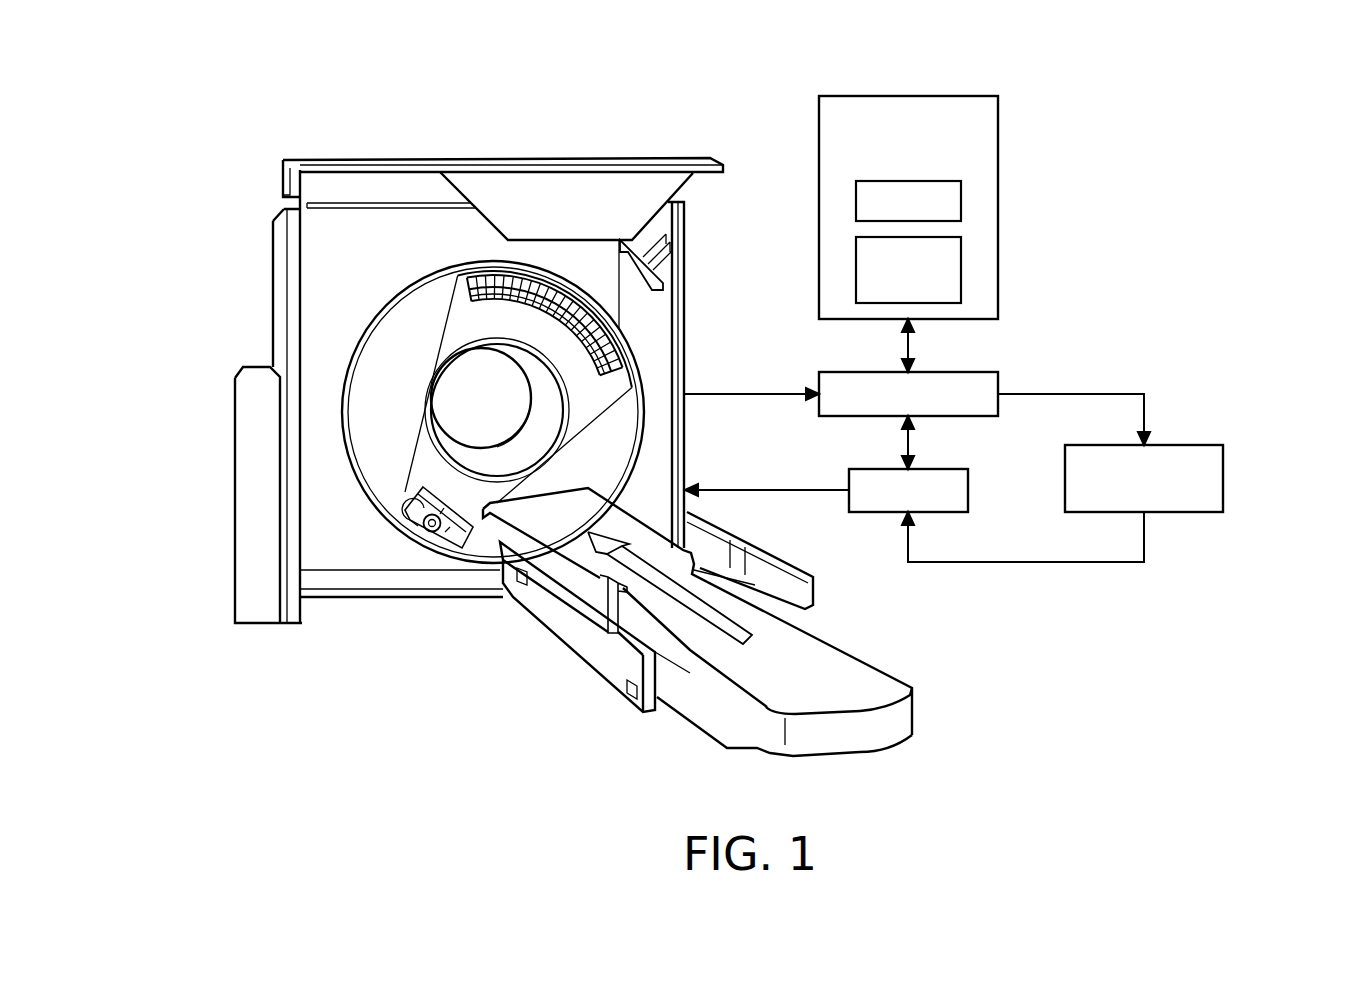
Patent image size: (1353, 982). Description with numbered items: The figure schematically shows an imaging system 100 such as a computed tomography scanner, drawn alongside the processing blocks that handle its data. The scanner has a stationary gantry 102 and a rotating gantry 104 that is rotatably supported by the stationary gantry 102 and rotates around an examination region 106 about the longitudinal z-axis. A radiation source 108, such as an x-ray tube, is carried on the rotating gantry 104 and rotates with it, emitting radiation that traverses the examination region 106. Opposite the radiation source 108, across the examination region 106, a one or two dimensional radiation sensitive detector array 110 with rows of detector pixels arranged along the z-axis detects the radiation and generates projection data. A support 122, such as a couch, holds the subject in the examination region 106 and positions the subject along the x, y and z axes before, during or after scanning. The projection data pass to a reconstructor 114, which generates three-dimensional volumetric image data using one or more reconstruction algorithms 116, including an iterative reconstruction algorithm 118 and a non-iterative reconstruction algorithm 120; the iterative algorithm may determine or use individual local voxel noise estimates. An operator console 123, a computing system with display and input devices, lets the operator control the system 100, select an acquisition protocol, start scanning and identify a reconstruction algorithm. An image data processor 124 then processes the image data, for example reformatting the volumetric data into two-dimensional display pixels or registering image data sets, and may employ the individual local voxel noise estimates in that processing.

The imaging system 100 is at (190, 126).
The stationary gantry 102 is at (293, 284).
The rotating gantry 104 is at (464, 320).
The examination region 106 is at (474, 393).
The radiation source 108 is at (430, 532).
The radiation sensitive detector array 110 is at (606, 326).
The reconstructor 114 is at (998, 380).
The reconstruction algorithms 116 is at (998, 133).
The iterative reconstruction algorithm 118 is at (962, 198).
The non-iterative reconstruction algorithm 120 is at (962, 270).
The support 122 is at (850, 687).
The operator console 123 is at (968, 490).
The image data processor 124 is at (1223, 478).